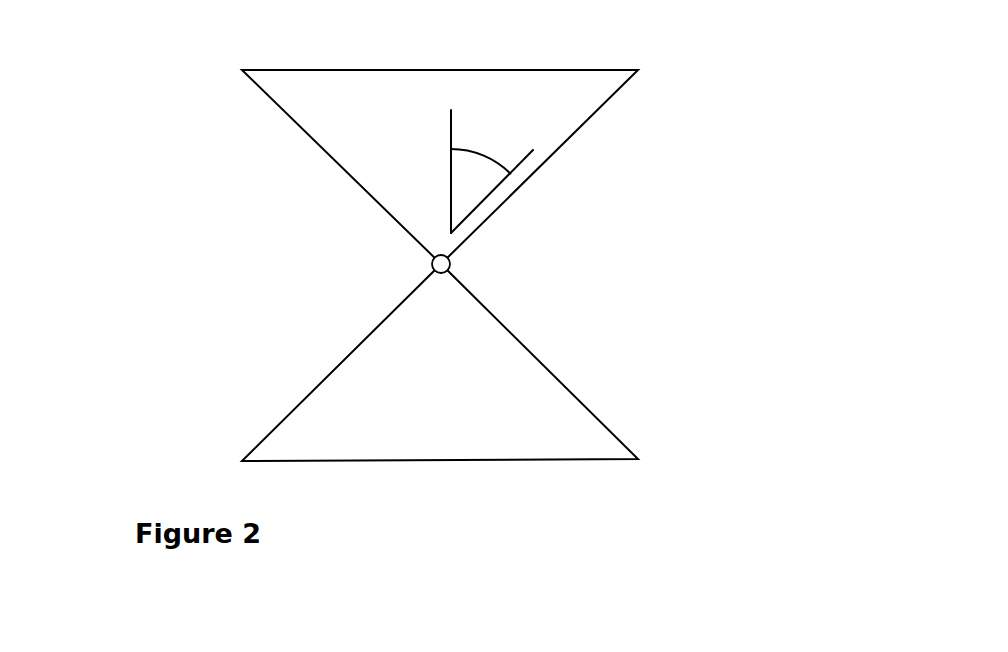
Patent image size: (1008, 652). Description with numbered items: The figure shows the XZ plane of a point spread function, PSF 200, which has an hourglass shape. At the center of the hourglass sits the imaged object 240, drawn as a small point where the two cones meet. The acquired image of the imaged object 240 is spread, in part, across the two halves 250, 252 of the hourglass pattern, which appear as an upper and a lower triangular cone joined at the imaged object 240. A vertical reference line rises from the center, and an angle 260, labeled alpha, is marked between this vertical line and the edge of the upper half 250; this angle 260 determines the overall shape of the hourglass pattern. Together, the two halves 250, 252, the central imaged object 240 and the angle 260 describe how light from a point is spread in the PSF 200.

The PSF 200 is at (471, 242).
The imaged object 240 is at (430, 256).
The half of hourglass pattern 250 is at (555, 112).
The half of hourglass pattern 252 is at (533, 398).
The angle 260 is at (492, 193).